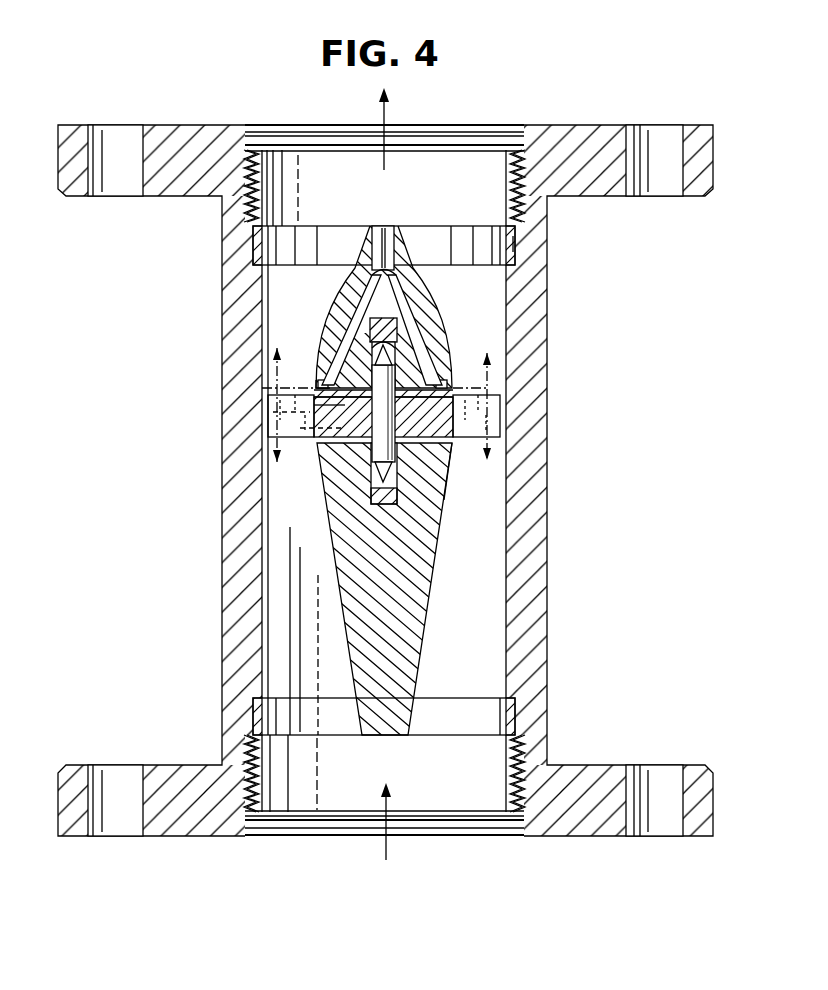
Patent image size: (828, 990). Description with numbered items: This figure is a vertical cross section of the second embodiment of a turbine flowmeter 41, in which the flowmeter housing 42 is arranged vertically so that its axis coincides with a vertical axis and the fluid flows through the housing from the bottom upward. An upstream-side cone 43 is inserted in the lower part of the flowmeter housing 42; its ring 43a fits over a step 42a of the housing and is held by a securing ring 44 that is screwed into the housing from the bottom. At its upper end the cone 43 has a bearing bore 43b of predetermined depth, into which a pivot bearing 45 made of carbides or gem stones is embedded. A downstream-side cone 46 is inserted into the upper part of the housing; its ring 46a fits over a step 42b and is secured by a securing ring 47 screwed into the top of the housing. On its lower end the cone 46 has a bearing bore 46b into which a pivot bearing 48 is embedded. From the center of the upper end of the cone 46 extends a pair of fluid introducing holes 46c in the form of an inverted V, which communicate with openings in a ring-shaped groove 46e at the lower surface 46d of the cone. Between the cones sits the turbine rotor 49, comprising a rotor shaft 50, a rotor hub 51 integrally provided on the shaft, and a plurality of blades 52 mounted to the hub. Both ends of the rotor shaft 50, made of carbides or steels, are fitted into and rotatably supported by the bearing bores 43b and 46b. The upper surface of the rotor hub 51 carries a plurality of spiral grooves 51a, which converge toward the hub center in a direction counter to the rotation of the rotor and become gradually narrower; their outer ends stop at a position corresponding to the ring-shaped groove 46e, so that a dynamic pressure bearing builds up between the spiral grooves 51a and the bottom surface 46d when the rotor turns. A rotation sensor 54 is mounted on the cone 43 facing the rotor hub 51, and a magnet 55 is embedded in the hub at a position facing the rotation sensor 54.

The turbine flowmeter 41 is at (226, 114).
The flowmeter housing 42 is at (543, 537).
The step 42a is at (507, 712).
The step 42b is at (503, 250).
The upstream-side cone 43 is at (430, 615).
The ring 43a is at (512, 716).
The bearing bore 43b is at (437, 496).
The securing ring 44 is at (507, 785).
The pivot bearing 45 is at (372, 497).
The downstream-side cone 46 is at (444, 296).
The ring 46a is at (513, 242).
The bearing bore 46b is at (368, 357).
The fluid introducing holes 46c is at (352, 310).
The lower surface 46d is at (335, 406).
The ring-shaped groove 46e is at (316, 384).
The securing ring 47 is at (508, 166).
The pivot bearing 48 is at (393, 338).
The turbine rotor 49 is at (496, 382).
The rotor shaft 50 is at (400, 480).
The rotor hub 51 is at (444, 428).
The spiral grooves 51a is at (300, 428).
The blades 52 is at (488, 410).
The rotation sensor 54 is at (347, 447).
The magnet 55 is at (272, 427).